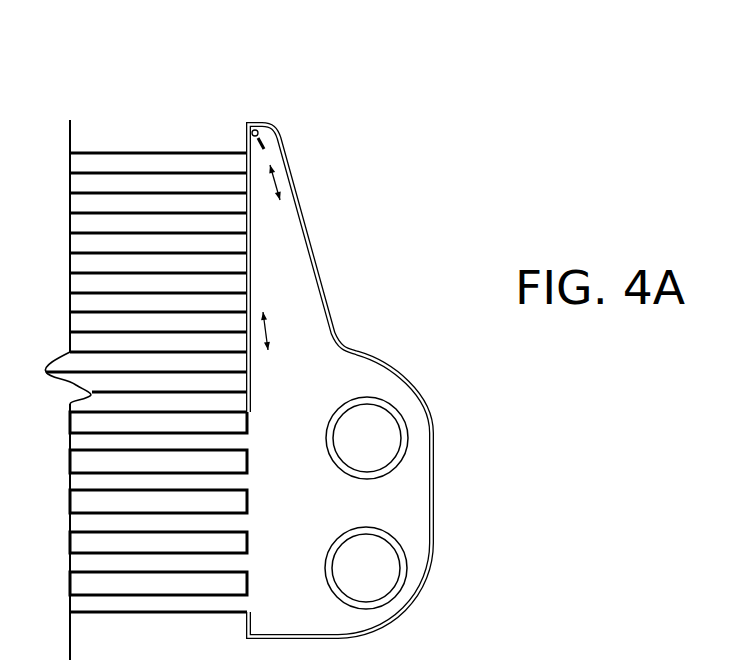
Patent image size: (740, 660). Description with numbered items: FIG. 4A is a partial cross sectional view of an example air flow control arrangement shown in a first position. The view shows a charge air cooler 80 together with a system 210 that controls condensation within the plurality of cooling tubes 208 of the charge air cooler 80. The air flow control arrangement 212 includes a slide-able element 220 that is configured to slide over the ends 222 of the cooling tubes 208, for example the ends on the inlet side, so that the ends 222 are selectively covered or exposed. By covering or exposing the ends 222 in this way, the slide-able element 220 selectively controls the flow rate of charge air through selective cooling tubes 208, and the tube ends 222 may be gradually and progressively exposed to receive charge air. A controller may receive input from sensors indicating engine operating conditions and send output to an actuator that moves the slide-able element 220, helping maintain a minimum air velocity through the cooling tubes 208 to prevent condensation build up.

The charge air cooler 80 is at (478, 133).
The cooling tubes 208 is at (145, 153).
The system 210 is at (322, 140).
The air flow control arrangement 212 is at (187, 82).
The slide-able element 220 is at (248, 275).
The ends 222 is at (240, 400).